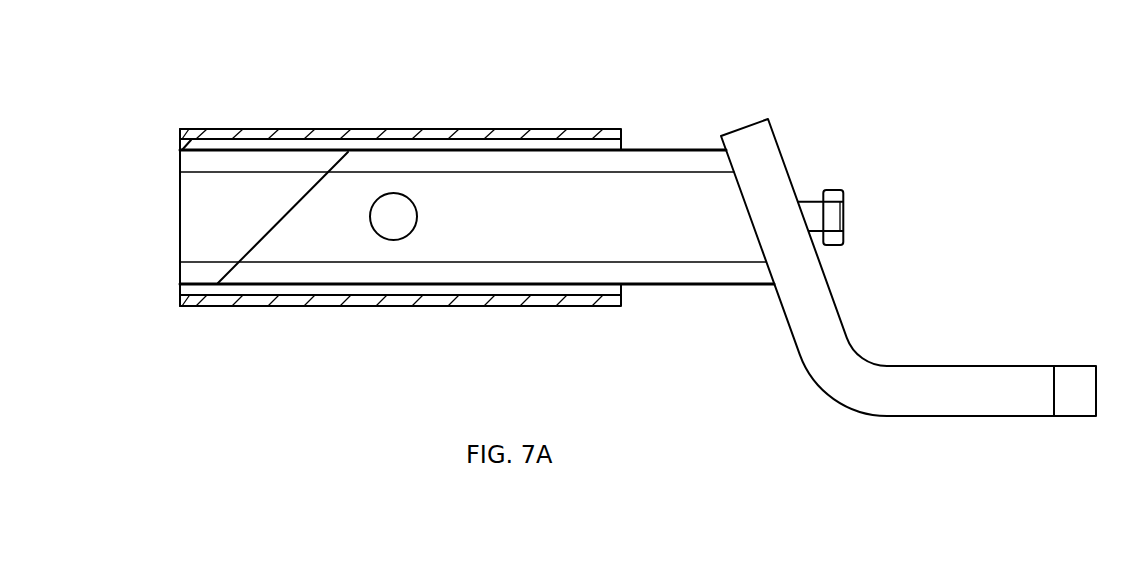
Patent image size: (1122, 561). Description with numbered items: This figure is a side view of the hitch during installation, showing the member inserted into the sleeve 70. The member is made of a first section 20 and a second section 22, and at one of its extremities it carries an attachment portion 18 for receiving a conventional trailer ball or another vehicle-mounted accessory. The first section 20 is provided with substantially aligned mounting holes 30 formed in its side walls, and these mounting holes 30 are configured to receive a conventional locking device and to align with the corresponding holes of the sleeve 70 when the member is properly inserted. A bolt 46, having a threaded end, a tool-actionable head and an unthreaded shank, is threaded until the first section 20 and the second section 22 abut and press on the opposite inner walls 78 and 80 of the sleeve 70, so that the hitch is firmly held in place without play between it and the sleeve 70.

The attachment portion 18 is at (982, 397).
The first section 20 is at (690, 274).
The second section 22 is at (190, 245).
The mounting holes 30 is at (417, 216).
The bolt 46 is at (812, 200).
The sleeve 70 is at (400, 132).
The inner wall 78 is at (202, 146).
The inner wall 80 is at (194, 298).